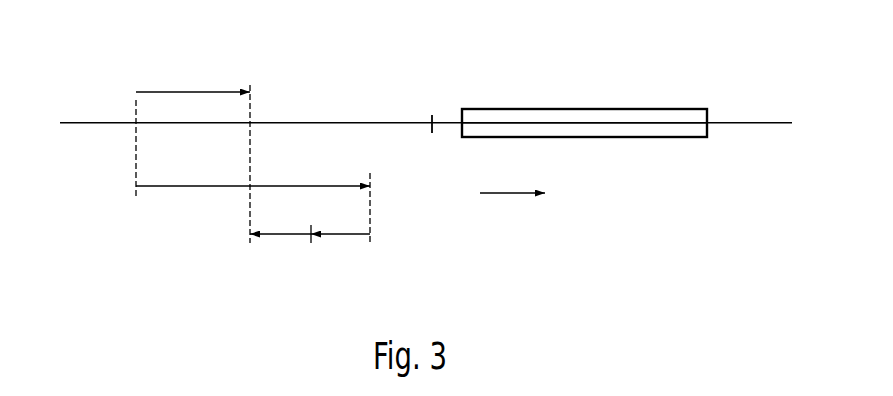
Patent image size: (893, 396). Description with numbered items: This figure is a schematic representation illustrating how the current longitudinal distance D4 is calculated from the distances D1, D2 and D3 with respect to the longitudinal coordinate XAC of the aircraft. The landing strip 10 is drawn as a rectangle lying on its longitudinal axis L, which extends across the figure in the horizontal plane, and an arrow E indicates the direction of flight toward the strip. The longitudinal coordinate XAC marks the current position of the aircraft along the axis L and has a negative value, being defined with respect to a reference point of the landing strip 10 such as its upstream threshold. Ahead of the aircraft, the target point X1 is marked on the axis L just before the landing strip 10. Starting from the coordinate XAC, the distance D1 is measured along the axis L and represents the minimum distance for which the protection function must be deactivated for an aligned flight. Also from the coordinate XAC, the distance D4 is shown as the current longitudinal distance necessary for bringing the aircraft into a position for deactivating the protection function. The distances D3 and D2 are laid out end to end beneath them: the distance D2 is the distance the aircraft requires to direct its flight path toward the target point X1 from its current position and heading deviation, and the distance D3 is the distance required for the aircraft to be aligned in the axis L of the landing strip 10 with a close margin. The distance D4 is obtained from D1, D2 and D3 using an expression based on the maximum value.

The landing strip 10 is at (657, 137).
The longitudinal axis L is at (617, 122).
The target point X1 is at (431, 111).
The longitudinal coordinate XAC is at (136, 122).
The current longitudinal distance D4 is at (193, 153).
The distance D1 is at (253, 203).
The distance D3 is at (280, 225).
The distance D2 is at (340, 221).
The direction of flight E is at (510, 193).